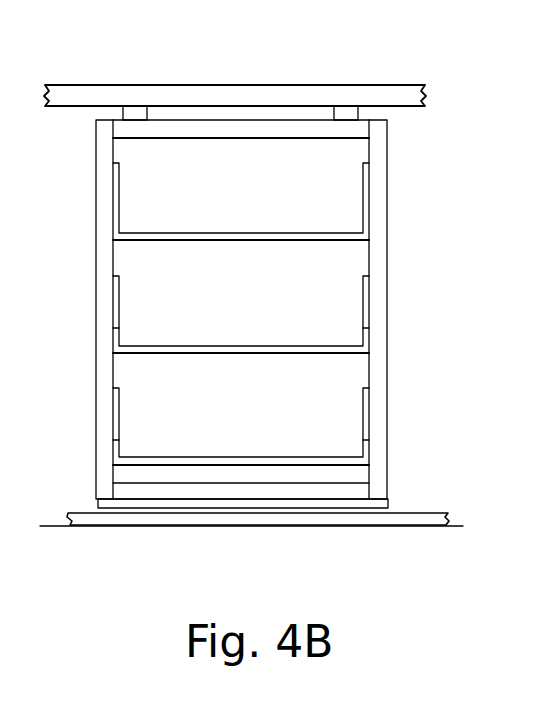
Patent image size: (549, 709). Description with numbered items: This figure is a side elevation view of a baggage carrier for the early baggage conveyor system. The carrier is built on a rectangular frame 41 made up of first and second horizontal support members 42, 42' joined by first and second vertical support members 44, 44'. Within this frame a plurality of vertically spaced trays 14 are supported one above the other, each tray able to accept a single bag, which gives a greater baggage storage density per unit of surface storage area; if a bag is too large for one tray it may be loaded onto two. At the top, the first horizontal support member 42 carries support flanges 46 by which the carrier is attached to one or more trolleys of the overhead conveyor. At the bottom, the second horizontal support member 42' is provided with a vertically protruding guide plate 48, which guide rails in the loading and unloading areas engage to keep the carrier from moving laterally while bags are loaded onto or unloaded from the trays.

The trays 14 is at (149, 346).
The rectangular frame 41 is at (251, 309).
The first horizontal support member 42 is at (235, 73).
The second horizontal support member 42' is at (243, 546).
The first vertical support member 44 is at (67, 309).
The second vertical support member 44' is at (425, 309).
The support flanges 46 is at (136, 115).
The guide plate 48 is at (327, 505).